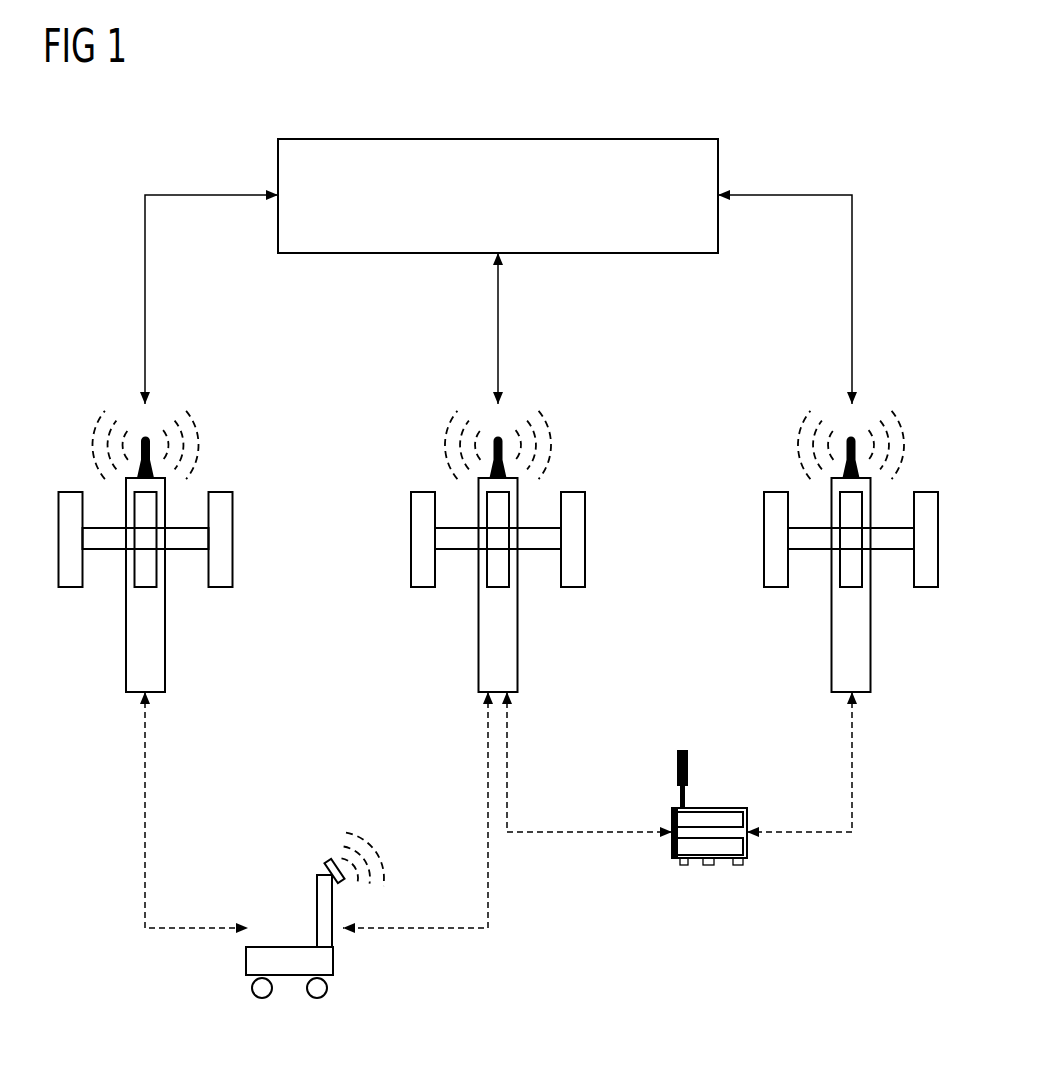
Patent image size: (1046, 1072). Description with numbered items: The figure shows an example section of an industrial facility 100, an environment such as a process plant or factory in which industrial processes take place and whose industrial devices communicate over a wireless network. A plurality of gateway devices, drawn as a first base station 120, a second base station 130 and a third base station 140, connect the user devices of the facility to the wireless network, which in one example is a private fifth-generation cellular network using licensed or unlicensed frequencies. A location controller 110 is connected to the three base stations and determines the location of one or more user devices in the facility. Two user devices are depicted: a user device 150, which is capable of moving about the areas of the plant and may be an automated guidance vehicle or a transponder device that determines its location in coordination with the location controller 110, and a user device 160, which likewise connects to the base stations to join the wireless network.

The industrial facility 100 is at (811, 137).
The location controller 110 is at (498, 139).
The first base station 120 is at (165, 624).
The second base station 130 is at (518, 622).
The third base station 140 is at (871, 622).
The user device 150 is at (291, 976).
The user device 160 is at (712, 866).